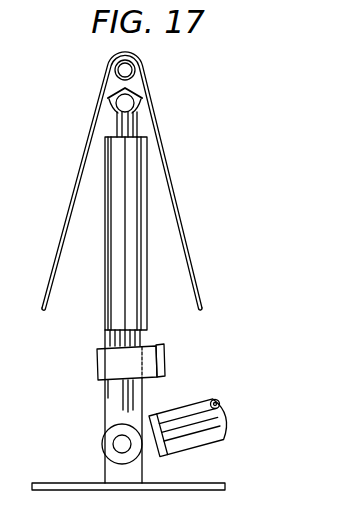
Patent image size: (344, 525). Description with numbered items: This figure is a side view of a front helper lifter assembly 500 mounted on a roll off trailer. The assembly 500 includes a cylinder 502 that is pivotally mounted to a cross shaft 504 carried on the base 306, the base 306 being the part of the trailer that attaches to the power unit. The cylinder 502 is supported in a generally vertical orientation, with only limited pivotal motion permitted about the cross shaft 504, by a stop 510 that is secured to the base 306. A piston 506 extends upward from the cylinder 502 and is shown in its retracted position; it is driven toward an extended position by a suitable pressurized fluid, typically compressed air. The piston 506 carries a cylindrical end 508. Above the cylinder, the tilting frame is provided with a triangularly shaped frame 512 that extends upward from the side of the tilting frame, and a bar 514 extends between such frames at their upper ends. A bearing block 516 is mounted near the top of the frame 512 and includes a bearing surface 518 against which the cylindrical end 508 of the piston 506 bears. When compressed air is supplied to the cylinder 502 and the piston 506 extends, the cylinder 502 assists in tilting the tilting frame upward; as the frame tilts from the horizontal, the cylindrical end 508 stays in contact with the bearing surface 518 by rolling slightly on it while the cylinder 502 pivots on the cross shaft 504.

The assembly 500 is at (201, 211).
The cylinder 502 is at (112, 283).
The cross shaft 504 is at (107, 438).
The piston 506 is at (136, 141).
The cylindrical end 508 is at (125, 103).
The stop 510 is at (163, 365).
The triangularly shaped frame 512 is at (71, 205).
The bar 514 is at (126, 70).
The bearing block 516 is at (113, 84).
The bearing surface 518 is at (137, 107).
The base 306 is at (204, 483).